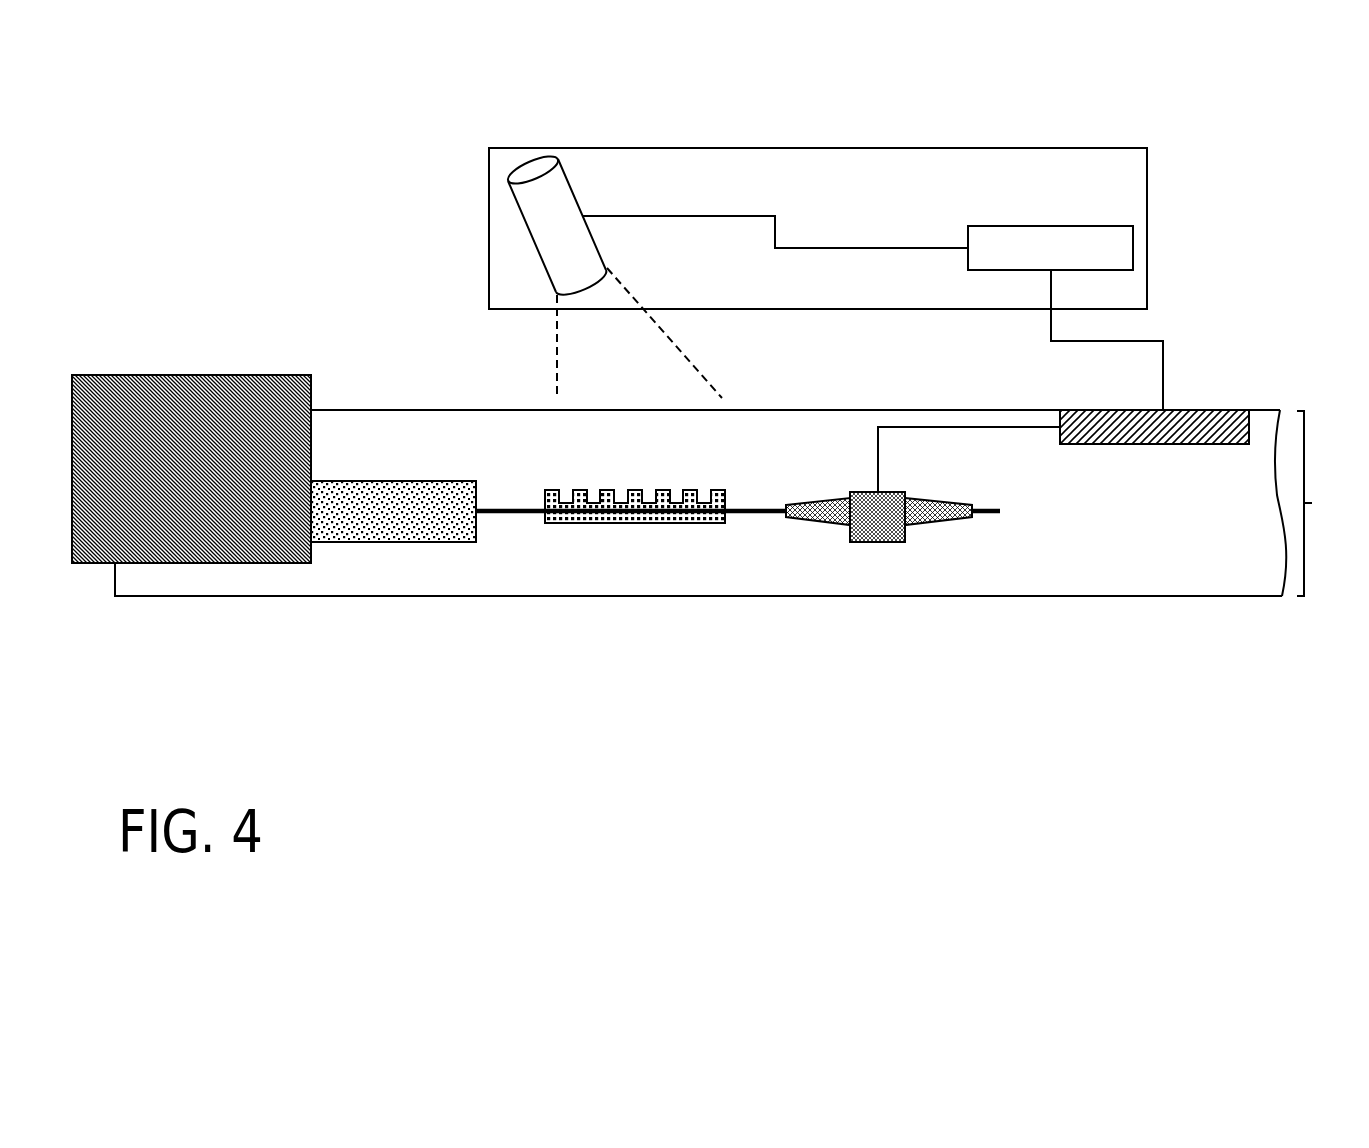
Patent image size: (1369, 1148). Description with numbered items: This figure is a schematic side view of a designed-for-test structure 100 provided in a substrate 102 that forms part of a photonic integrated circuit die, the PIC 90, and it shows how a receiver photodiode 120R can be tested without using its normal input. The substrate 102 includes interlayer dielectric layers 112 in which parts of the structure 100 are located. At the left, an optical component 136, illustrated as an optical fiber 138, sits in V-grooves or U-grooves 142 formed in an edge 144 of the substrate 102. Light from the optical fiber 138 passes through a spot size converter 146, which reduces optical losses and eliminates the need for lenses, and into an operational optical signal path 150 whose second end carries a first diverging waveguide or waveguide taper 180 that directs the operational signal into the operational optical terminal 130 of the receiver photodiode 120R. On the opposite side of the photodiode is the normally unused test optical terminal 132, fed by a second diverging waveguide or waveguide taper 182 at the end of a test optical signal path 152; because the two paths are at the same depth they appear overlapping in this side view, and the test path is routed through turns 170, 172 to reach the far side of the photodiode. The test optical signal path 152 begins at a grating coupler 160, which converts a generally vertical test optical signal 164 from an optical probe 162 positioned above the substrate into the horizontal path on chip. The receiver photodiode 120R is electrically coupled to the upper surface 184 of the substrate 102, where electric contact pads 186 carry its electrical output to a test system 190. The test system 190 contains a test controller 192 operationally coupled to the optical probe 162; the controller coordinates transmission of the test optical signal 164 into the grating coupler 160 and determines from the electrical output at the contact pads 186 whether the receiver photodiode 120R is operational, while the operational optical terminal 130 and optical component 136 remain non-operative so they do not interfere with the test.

The photonic integrated circuit (PIC) die 90 is at (1276, 388).
The structure 100 is at (339, 316).
The substrate 102 is at (1331, 503).
The interlayer dielectric layer(s) 112 is at (381, 432).
The receiver photodiode 120R is at (875, 603).
The operational optical terminal 130 is at (875, 502).
The test optical terminal 132 is at (900, 508).
The optical component 136 is at (191, 430).
The optical fiber 138 is at (190, 397).
The V-grooves or U-grooves 142 is at (191, 531).
The edge 144 is at (127, 578).
The spot size converter (SSC) 146 is at (380, 515).
The operational optical signal path 150 is at (530, 508).
The test optical signal path 152 is at (756, 510).
The grating coupler 160 is at (572, 495).
The optical probe 162 is at (555, 222).
The test optical signal 164 is at (680, 348).
The turn 170 is at (1046, 627).
The turn 172 is at (994, 513).
The first diverging waveguide or waveguide taper 180 is at (837, 507).
The second diverging waveguide or waveguide taper 182 is at (934, 516).
The upper surface 184 is at (890, 410).
The electric contact pads 186 is at (1205, 417).
The test system 190 is at (1161, 207).
The test controller 192 is at (1030, 260).